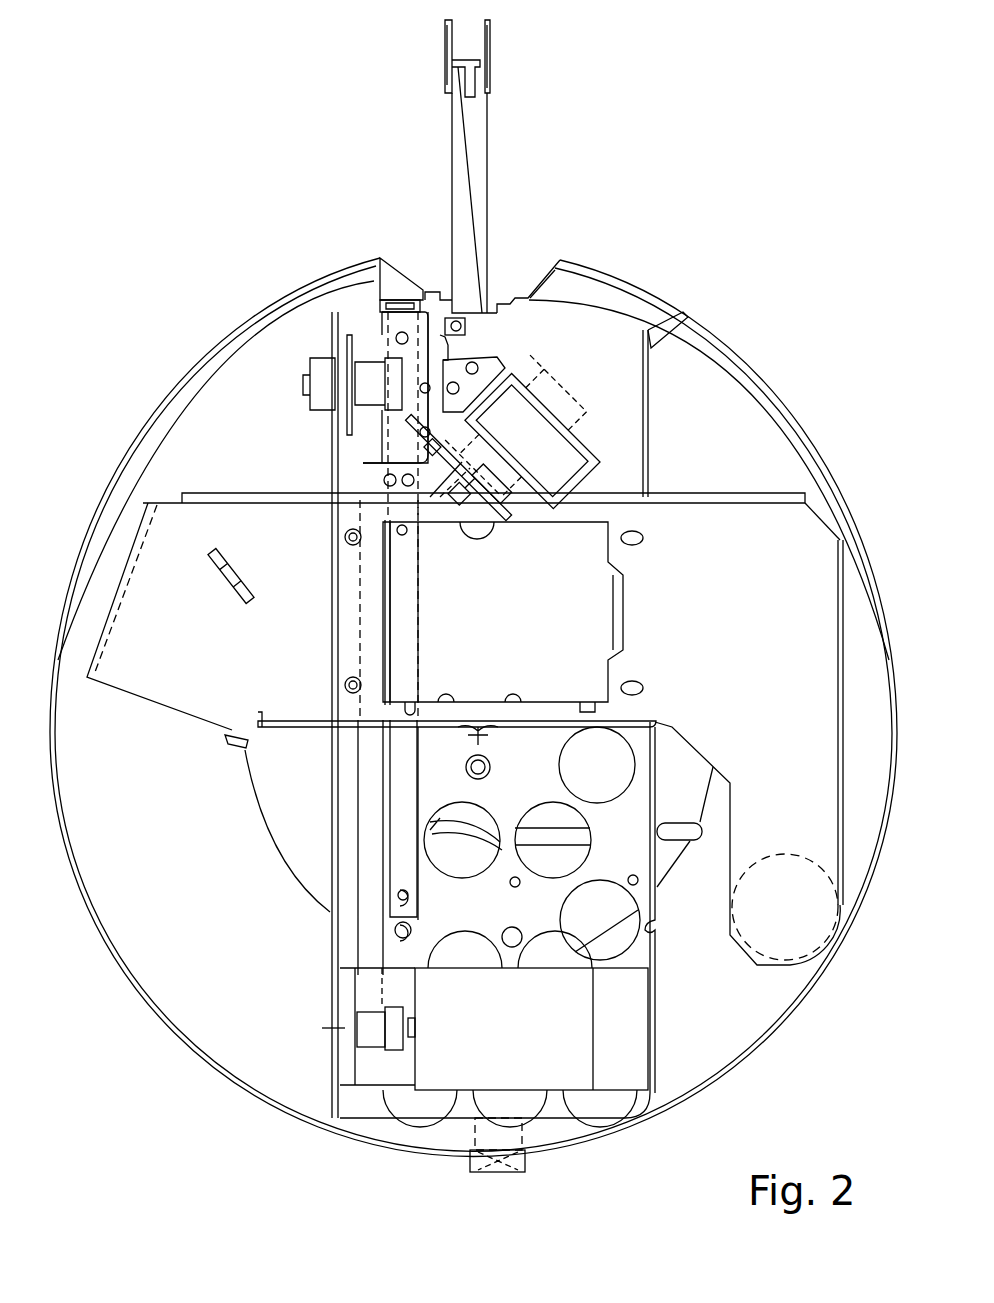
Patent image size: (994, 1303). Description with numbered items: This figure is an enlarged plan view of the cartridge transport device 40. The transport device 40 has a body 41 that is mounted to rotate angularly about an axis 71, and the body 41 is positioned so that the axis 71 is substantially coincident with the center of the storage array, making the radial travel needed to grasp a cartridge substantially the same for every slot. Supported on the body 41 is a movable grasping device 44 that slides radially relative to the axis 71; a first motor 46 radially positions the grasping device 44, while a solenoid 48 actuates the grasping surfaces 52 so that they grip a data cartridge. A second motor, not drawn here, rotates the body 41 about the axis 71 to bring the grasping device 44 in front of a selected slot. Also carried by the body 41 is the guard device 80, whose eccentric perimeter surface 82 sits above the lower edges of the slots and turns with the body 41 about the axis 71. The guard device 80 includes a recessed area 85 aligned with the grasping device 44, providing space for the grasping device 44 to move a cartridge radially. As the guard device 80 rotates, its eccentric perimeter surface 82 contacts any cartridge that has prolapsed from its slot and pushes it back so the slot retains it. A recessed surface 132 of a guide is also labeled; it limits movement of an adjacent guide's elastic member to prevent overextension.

The transport device 40 is at (660, 448).
The body 41 is at (658, 988).
The grasping device 44 is at (489, 185).
The first motor 46 is at (443, 1080).
The solenoid 48 is at (531, 466).
The grasping surfaces 52 is at (453, 52).
The axis 71 is at (478, 716).
The guard device 80 is at (713, 402).
The eccentric perimeter surface 82 is at (790, 400).
The recessed area 85 is at (402, 298).
The recessed surface 132 is at (516, 462).